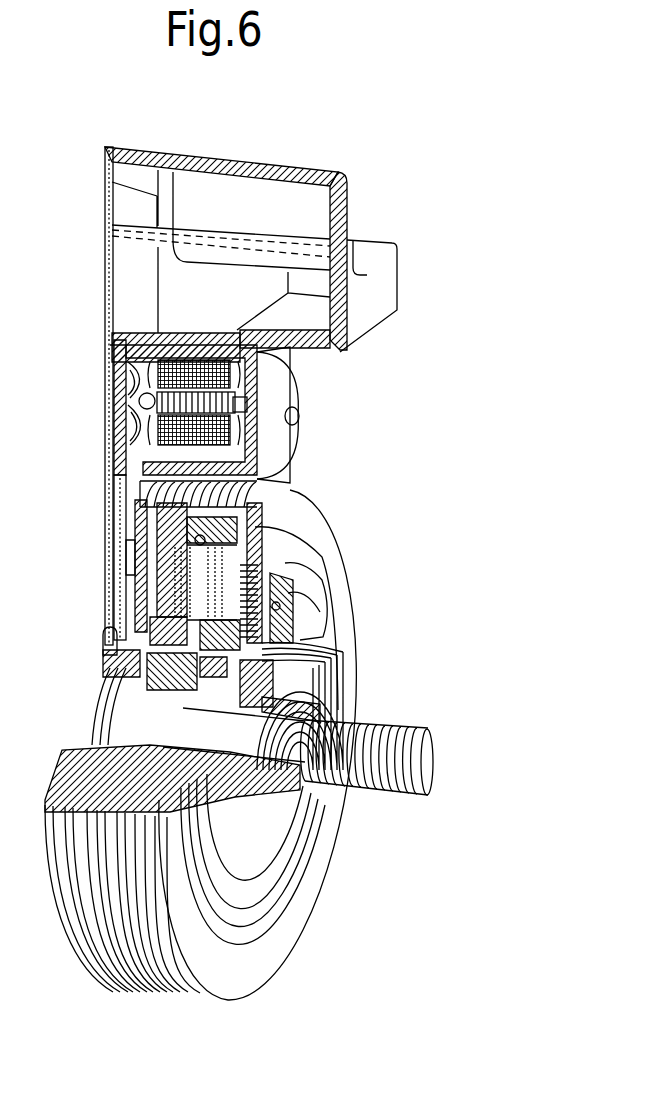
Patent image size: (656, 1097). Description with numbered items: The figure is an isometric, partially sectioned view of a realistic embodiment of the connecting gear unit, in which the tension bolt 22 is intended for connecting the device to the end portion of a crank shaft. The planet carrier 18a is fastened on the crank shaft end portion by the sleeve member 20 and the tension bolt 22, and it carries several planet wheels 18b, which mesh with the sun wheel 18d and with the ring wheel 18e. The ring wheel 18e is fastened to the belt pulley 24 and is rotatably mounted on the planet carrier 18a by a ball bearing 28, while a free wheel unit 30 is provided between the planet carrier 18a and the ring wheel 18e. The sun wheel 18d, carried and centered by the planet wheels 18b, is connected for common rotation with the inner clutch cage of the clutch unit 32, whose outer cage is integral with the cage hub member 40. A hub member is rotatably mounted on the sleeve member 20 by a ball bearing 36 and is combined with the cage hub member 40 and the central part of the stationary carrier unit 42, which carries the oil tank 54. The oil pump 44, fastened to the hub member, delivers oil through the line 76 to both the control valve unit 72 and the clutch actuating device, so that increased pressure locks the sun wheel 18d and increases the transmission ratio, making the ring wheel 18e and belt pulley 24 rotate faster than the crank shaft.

The oil tank 54 is at (280, 195).
The control valve unit 72 is at (123, 428).
The carrier unit 42 is at (94, 447).
The line 76 is at (112, 486).
The ball bearing 28 is at (128, 514).
The planet carrier 18a is at (130, 555).
The clutch unit 32 is at (115, 600).
The cage hub member 40 is at (112, 660).
The oil pump 44 is at (173, 706).
The ball bearing 36 is at (207, 712).
The free wheel unit 30 is at (262, 492).
The ring wheel 18e is at (270, 563).
The planet wheels 18b is at (290, 550).
The sun wheel 18d is at (285, 655).
The sleeve member 20 is at (293, 697).
The tension bolt 22 is at (374, 783).
The belt pulley 24 is at (280, 918).